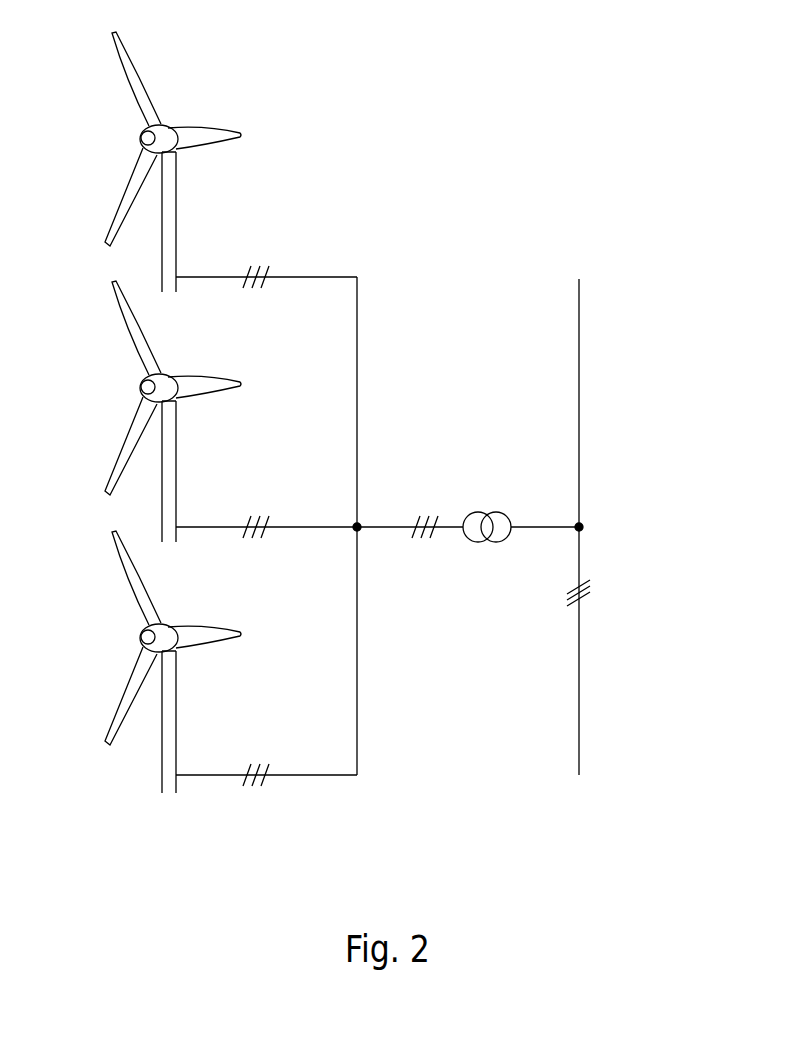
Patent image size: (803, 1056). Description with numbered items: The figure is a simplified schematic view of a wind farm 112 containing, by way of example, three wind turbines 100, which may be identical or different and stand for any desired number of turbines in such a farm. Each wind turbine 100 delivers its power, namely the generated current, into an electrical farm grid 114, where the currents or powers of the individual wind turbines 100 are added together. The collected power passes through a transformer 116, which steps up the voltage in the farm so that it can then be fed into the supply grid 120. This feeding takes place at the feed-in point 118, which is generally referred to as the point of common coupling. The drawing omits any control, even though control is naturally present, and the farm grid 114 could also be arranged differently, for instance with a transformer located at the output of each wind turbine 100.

The wind turbine 100 is at (176, 207).
The wind farm 112 is at (436, 175).
The electrical farm grid 114 is at (382, 527).
The transformer 116 is at (490, 498).
The feed-in point 118 is at (592, 508).
The supply grid 120 is at (579, 315).